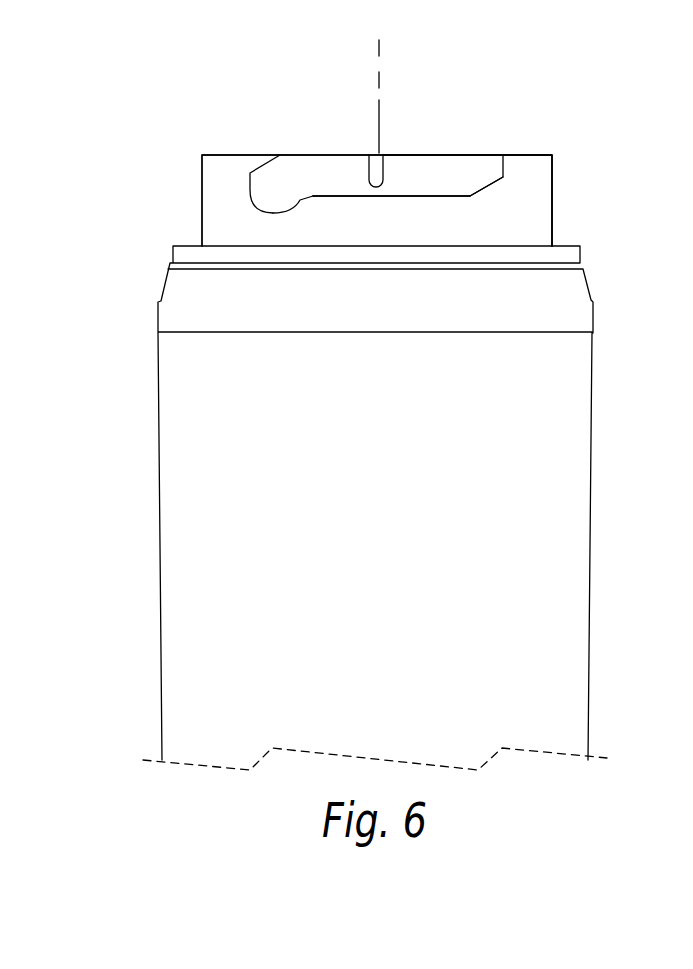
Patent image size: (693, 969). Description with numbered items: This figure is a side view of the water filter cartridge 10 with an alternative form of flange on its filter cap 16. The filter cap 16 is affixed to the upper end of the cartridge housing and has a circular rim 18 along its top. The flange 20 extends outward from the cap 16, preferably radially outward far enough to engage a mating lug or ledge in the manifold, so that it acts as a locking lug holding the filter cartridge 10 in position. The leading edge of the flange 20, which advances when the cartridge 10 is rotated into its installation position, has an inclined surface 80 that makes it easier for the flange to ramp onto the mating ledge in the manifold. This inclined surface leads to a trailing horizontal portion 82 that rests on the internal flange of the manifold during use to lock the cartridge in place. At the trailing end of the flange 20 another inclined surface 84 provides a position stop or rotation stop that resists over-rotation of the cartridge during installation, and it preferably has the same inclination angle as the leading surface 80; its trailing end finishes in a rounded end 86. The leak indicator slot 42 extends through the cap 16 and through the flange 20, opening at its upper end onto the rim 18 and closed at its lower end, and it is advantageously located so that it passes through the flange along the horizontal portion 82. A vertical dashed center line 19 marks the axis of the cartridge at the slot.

The water filter cartridge 10 is at (679, 404).
The filter cap 16 is at (550, 168).
The circular rim 18 is at (227, 155).
The central axis 19 is at (393, 50).
The flange 20 is at (457, 167).
The leak indicator slot passageway 42 is at (369, 163).
The inclined surface 80 is at (490, 188).
The horizontal portion 82 is at (442, 202).
The inclined surface 84 is at (297, 210).
The rounded end 86 is at (257, 208).